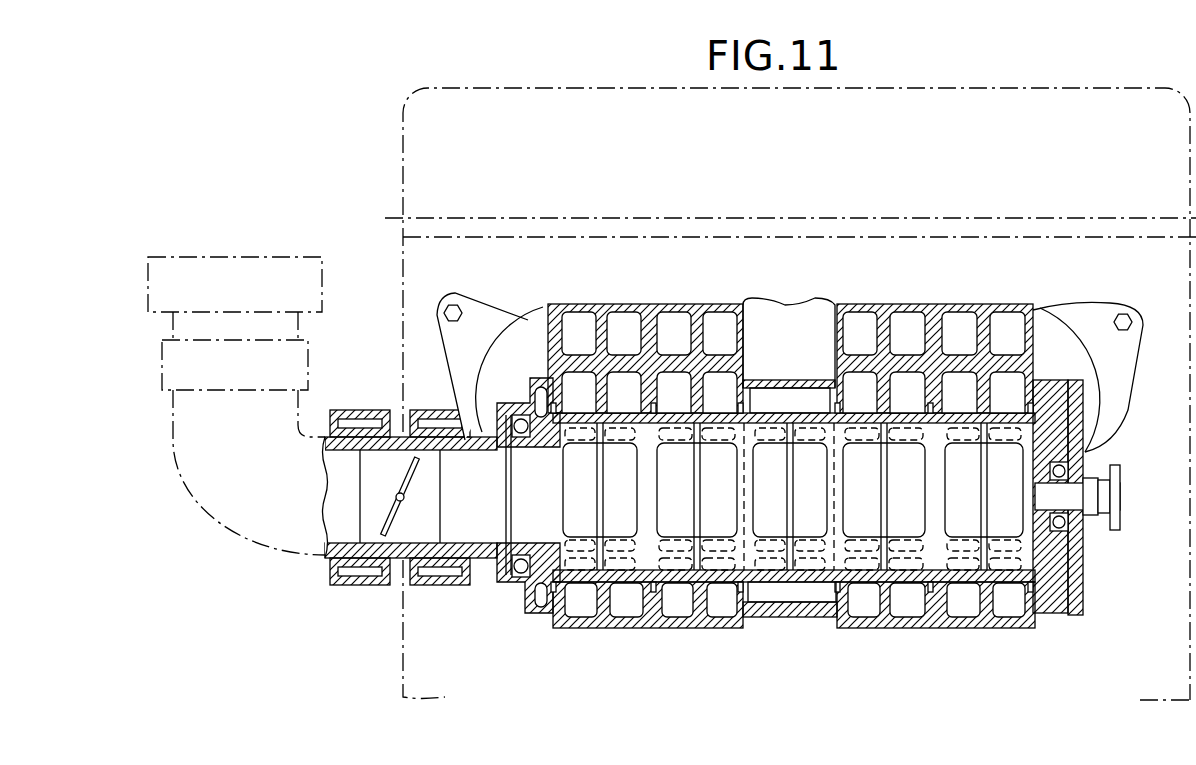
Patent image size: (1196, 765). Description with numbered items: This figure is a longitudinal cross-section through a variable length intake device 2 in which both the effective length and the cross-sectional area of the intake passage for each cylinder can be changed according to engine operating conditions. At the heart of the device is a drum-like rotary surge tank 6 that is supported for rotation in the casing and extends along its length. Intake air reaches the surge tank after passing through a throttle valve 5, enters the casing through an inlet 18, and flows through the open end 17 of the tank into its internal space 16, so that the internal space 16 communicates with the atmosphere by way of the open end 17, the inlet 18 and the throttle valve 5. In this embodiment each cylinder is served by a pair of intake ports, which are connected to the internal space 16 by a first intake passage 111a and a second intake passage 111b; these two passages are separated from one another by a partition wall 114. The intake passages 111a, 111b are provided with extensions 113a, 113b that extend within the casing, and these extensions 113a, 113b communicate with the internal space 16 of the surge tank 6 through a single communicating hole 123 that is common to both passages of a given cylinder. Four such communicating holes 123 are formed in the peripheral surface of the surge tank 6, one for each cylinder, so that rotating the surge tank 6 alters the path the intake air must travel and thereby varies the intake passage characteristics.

The variable length intake device 2 is at (527, 625).
The throttle valve 5 is at (398, 521).
The rotary surge tank 6 is at (790, 565).
The internal space 16 is at (820, 565).
The open end 17 is at (539, 517).
The inlet 18 is at (479, 517).
The first intake passage 111a is at (622, 337).
The second intake passage 111b is at (573, 337).
The extension 113a is at (616, 388).
The extension 113b is at (578, 384).
The partition wall 114 is at (598, 600).
The communicating hole 123 is at (568, 468).